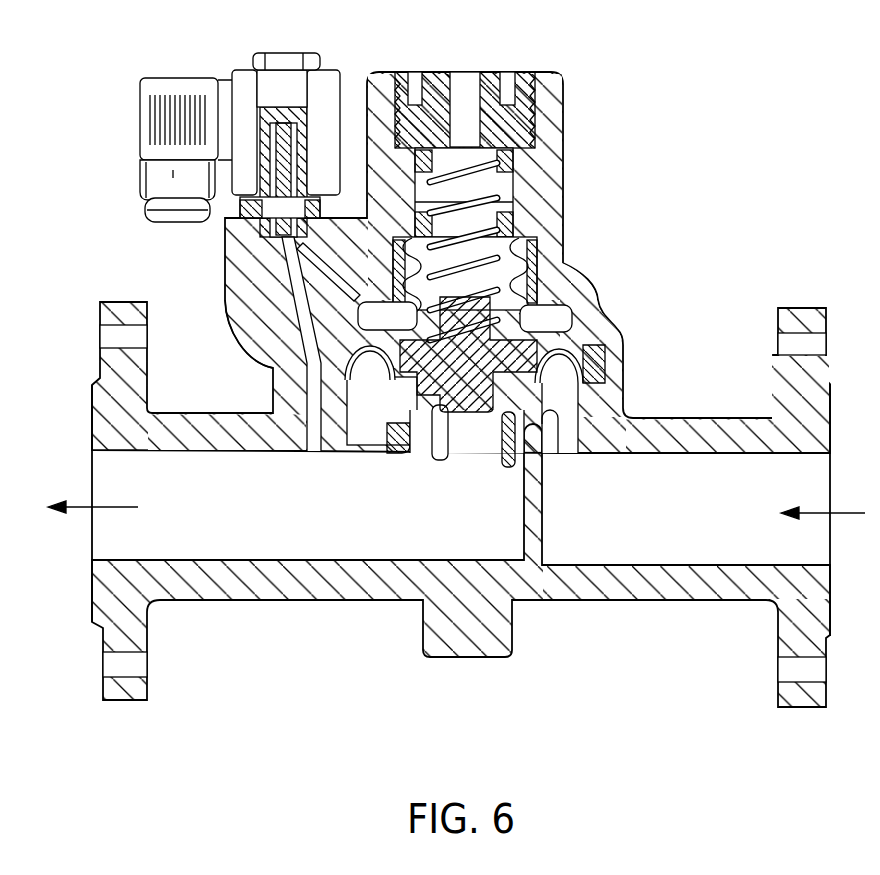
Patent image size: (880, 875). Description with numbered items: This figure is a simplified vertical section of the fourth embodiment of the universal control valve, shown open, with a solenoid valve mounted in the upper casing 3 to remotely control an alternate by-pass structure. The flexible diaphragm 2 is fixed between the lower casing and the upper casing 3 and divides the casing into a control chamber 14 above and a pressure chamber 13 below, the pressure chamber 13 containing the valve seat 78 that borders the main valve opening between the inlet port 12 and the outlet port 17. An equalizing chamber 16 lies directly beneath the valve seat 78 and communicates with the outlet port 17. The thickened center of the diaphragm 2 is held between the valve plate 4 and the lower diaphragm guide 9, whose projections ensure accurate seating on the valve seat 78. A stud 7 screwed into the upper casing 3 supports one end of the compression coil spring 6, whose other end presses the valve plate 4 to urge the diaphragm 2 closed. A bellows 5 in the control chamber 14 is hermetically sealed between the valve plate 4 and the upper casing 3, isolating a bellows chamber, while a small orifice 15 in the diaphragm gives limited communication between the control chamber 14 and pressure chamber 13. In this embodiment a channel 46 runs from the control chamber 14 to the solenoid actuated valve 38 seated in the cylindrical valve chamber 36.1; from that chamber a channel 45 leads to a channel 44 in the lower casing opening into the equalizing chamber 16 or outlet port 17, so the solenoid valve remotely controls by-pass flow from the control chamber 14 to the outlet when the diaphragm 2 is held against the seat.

The flexible diaphragm 2 is at (387, 372).
The upper casing 3 is at (550, 147).
The valve plate 4 is at (553, 342).
The bellows 5 is at (520, 265).
The compression coil spring 6 is at (455, 207).
The stud 7 is at (500, 122).
The diaphragm guide 9 is at (432, 458).
The inlet port 12 is at (792, 493).
The pressure chamber 13 is at (557, 393).
The control chamber 14 is at (553, 320).
The orifice 15 is at (367, 360).
The equalizing chamber 16 is at (487, 520).
The outlet port 17 is at (132, 487).
The cylindrical valve chamber 36.1 is at (247, 208).
The solenoid actuated valve 38 is at (247, 87).
The channel 44 is at (310, 425).
The channel 45 is at (257, 277).
The channel 46 is at (243, 302).
The valve seat 78 is at (552, 412).